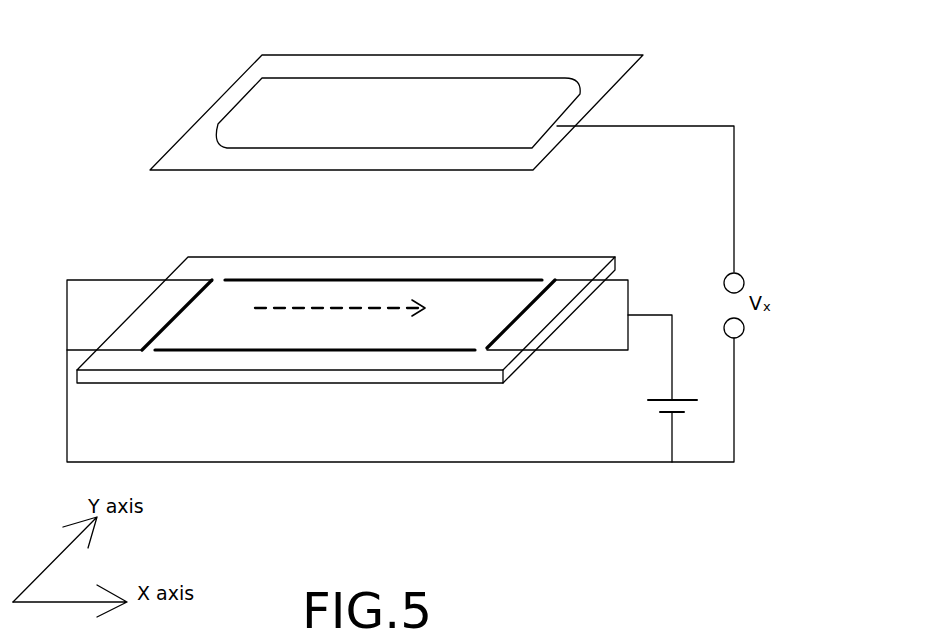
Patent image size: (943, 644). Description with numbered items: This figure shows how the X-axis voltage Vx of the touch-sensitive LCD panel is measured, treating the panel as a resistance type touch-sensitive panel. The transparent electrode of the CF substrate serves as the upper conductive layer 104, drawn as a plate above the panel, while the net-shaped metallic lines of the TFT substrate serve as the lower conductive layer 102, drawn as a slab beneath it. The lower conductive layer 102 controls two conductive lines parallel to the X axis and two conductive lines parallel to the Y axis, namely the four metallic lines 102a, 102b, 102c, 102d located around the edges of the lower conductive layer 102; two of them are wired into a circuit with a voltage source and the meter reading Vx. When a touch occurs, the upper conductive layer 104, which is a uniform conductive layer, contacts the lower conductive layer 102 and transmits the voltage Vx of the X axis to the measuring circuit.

The upper conductive layer 104 is at (513, 92).
The lower conductive layer 102 is at (472, 303).
The metallic line 102a is at (173, 315).
The metallic line 102b is at (361, 279).
The metallic line 102c is at (520, 317).
The metallic line 102d is at (317, 350).